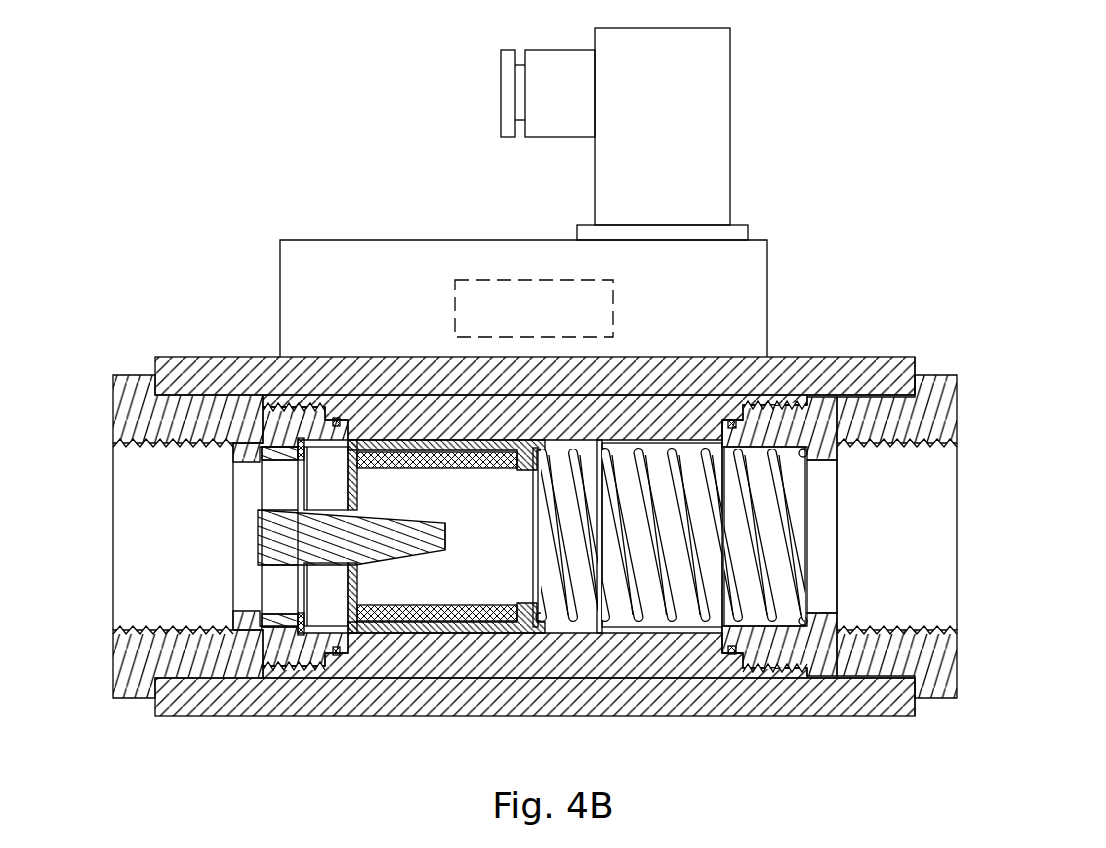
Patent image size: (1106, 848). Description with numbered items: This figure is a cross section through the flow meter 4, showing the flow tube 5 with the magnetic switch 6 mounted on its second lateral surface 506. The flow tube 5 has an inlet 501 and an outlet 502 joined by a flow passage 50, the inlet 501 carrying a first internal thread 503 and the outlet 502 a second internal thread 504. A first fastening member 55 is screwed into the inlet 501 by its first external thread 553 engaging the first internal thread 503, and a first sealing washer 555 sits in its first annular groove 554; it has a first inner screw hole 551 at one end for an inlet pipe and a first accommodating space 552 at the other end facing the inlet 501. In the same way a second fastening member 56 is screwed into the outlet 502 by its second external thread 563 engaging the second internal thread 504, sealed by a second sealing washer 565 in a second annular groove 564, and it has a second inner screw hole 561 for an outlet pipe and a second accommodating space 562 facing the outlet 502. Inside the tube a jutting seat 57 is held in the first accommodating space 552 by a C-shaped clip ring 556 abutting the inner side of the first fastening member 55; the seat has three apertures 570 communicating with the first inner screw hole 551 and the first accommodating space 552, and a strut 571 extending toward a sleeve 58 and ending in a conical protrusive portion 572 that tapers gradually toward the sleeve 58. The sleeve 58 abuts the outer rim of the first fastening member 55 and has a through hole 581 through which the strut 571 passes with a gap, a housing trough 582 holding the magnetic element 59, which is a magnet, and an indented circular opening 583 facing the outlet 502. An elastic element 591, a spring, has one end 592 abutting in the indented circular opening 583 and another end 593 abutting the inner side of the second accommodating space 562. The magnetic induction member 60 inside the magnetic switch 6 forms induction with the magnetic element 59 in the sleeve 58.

The flow meter 4 is at (1022, 133).
The flow tube 5 is at (861, 338).
The magnetic switch 6 is at (773, 218).
The flow passage 50 is at (473, 440).
The inlet 501 is at (184, 398).
The outlet 502 is at (878, 395).
The first internal thread 503 is at (268, 400).
The second internal thread 504 is at (803, 405).
The second lateral surface 506 is at (912, 370).
The first fastening member 55 is at (138, 393).
The first inner screw hole 551 is at (148, 583).
The first accommodating space 552 is at (325, 597).
The first external thread 553 is at (301, 632).
The first annular groove 554 is at (346, 428).
The first sealing washer 555 is at (337, 420).
The C-shaped clip ring 556 is at (277, 618).
The second fastening member 56 is at (938, 678).
The second inner screw hole 561 is at (908, 482).
The second accommodating space 562 is at (767, 447).
The second external thread 563 is at (790, 667).
The second annular groove 564 is at (729, 650).
The second sealing washer 565 is at (734, 656).
The jutting seat 57 is at (277, 585).
The aperture 570 is at (282, 482).
The strut 571 is at (338, 545).
The conical protrusive portion 572 is at (397, 558).
The sleeve 58 is at (420, 447).
The through hole 581 is at (353, 567).
The housing trough 582 is at (467, 620).
The indented circular opening 583 is at (573, 632).
The magnetic element 59 is at (387, 453).
The elastic element 591 is at (640, 587).
The one end 592 is at (540, 530).
The another end 593 is at (803, 537).
The magnetic induction member 60 is at (560, 280).